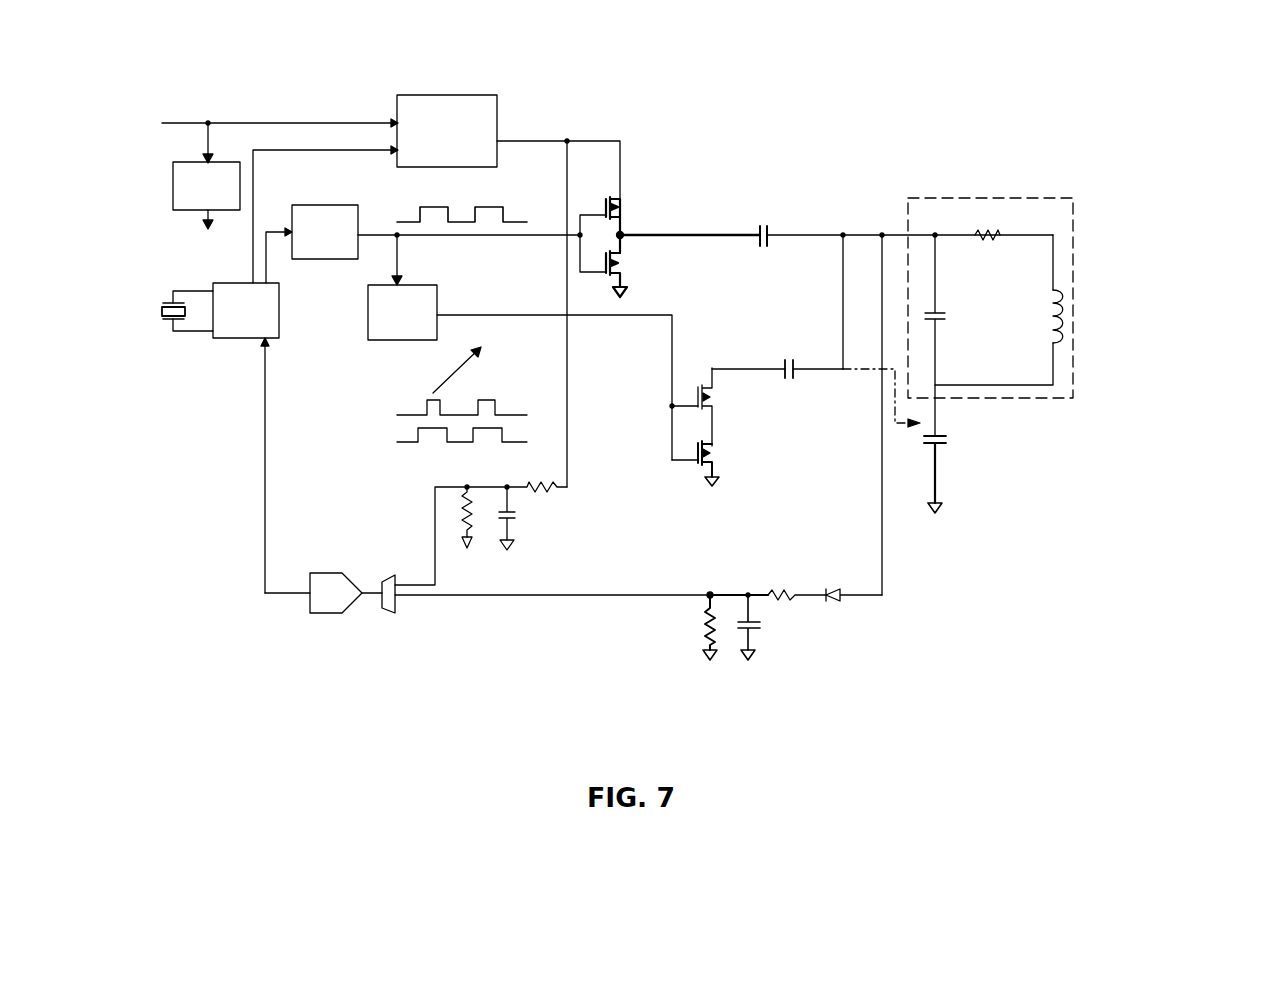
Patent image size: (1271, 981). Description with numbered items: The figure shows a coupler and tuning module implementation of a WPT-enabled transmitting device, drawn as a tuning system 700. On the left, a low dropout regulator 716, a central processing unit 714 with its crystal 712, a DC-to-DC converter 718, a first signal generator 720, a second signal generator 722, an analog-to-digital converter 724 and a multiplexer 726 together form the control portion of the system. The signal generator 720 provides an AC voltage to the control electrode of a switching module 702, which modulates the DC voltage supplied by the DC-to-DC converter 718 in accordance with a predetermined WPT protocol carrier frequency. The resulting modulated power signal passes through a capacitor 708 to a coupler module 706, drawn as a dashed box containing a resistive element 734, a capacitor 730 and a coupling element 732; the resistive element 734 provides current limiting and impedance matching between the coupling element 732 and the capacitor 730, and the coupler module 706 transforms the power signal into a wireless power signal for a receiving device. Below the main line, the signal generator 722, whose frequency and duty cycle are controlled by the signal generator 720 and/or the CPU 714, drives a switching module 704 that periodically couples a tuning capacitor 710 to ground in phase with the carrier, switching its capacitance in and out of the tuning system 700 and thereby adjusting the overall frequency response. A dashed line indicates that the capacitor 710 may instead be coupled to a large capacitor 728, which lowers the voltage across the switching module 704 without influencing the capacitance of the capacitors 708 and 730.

The tuning system 700 is at (1250, 49).
The switching module 702 is at (625, 205).
The switching module 704 is at (662, 466).
The coupler module 706 is at (1050, 193).
The capacitor 708 is at (776, 207).
The capacitor 710 is at (765, 357).
The crystal 712 is at (163, 330).
The central processing unit 714 is at (222, 345).
The low dropout regulator 716 is at (182, 214).
The DC-to-DC converter 718 is at (461, 91).
The signal generator 720 is at (328, 200).
The signal generator 722 is at (438, 296).
The analog-to-digital converter 724 is at (328, 622).
The multiplexer 726 is at (386, 617).
The capacitor 728 is at (948, 452).
The capacitor 730 is at (950, 327).
The coupling element 732 is at (1044, 335).
The resistive element 734 is at (978, 248).